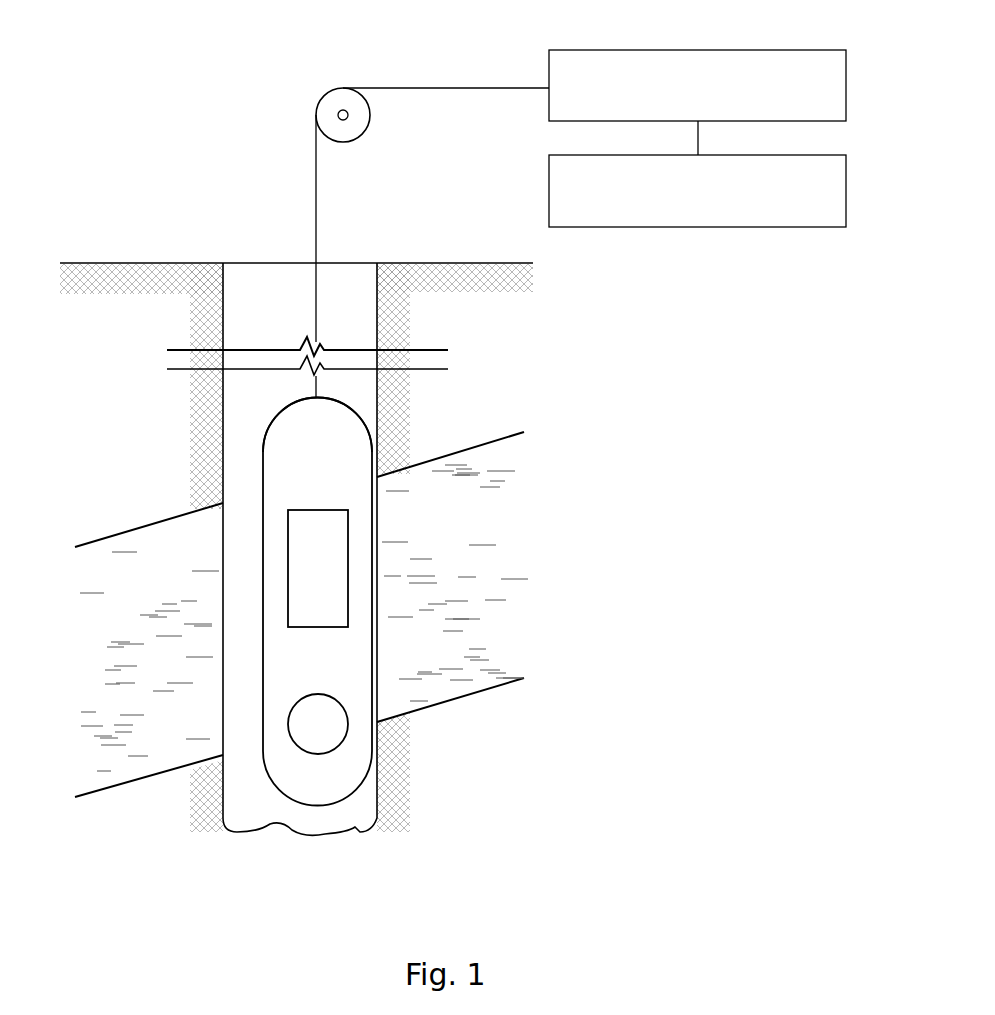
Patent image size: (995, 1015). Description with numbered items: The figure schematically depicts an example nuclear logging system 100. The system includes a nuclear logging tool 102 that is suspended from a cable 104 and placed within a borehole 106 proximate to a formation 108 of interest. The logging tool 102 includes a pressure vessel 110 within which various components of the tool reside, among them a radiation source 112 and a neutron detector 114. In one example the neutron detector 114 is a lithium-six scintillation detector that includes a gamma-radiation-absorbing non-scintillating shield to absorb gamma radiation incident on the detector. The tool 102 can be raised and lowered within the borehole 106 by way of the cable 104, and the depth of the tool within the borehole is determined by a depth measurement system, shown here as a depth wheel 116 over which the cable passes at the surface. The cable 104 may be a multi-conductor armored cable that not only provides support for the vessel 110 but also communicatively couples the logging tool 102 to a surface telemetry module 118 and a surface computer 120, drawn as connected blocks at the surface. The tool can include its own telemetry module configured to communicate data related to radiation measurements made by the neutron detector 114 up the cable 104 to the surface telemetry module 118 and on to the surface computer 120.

The nuclear logging system 100 is at (190, 118).
The nuclear logging tool 102 is at (263, 460).
The cable 104 is at (316, 206).
The borehole 106 is at (307, 549).
The formation 108 is at (296, 547).
The pressure vessel 110 is at (341, 437).
The radiation source 112 is at (303, 738).
The neutron detector 114 is at (300, 597).
The depth wheel 116 is at (356, 141).
The surface telemetry module 118 is at (637, 50).
The surface computer 120 is at (740, 227).